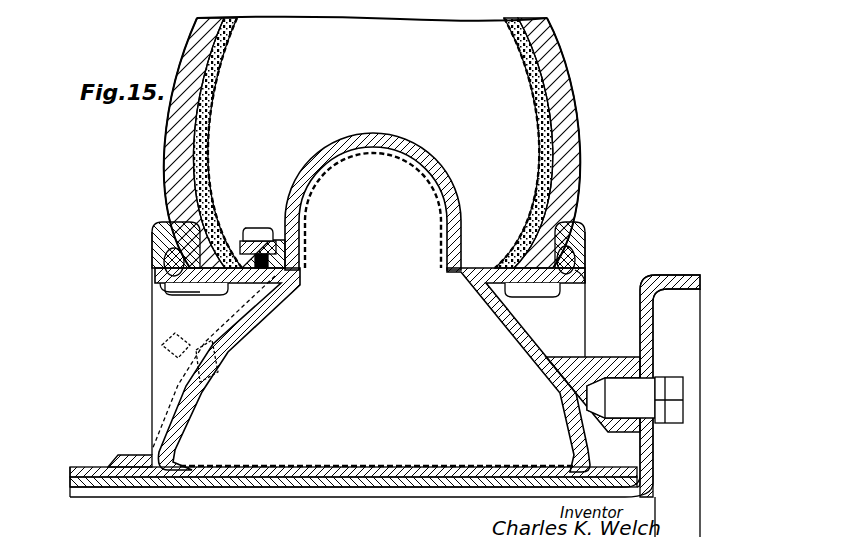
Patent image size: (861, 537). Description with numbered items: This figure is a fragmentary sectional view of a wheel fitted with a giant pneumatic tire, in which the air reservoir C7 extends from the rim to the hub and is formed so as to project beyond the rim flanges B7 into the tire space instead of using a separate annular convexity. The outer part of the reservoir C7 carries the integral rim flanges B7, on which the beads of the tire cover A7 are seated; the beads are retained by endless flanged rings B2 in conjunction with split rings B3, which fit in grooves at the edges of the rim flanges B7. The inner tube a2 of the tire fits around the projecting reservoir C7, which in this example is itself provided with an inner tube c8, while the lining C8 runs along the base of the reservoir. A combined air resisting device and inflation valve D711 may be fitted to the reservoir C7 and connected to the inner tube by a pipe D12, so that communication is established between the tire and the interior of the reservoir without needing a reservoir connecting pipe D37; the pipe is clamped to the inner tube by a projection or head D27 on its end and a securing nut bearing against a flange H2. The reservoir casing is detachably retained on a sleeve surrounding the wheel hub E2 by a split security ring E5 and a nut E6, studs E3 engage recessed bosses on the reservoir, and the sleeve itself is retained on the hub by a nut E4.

The tire cover A7 is at (573, 90).
The tire inner lining a2 is at (543, 164).
The reservoir C7 is at (445, 215).
The inner tube of the reservoir c8 is at (328, 163).
The flange H2 is at (373, 211).
The wheel hub E2 is at (397, 490).
The base lining C8 is at (303, 467).
The studs E3 is at (613, 398).
The endless flanged rings B2 is at (178, 226).
The split rings B3 is at (165, 262).
The rim flanges B7 is at (172, 283).
The projection or head D27 is at (257, 232).
The clamp plate D12 is at (247, 290).
The reservoir connecting pipe D37 is at (168, 345).
The clamp strap D711 is at (200, 347).
The nut E6 is at (132, 457).
The nut E4 is at (132, 478).
The split security ring E5 is at (150, 478).